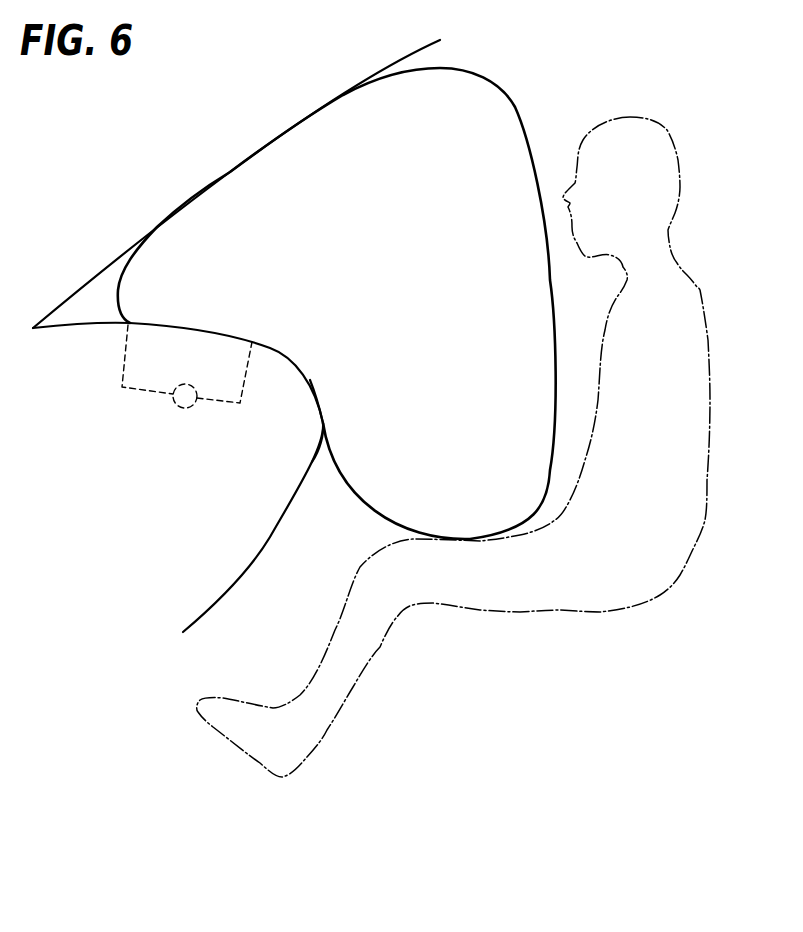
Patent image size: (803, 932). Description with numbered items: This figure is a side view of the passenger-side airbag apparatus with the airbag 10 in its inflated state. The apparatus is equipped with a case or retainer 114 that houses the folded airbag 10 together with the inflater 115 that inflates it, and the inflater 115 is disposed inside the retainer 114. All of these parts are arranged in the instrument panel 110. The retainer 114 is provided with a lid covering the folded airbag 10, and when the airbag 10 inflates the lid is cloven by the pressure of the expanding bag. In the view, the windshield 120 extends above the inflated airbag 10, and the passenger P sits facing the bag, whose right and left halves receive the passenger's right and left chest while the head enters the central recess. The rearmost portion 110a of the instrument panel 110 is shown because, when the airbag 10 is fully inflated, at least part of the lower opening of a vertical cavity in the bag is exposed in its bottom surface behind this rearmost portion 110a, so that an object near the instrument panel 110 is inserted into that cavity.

The airbag 10 is at (519, 104).
The instrument panel 110 is at (290, 361).
The rearmost portion of the instrument panel 110a is at (326, 421).
The case (retainer) 114 is at (118, 375).
The inflater 115 is at (183, 408).
The windshield 120 is at (434, 50).
The passenger P is at (687, 276).